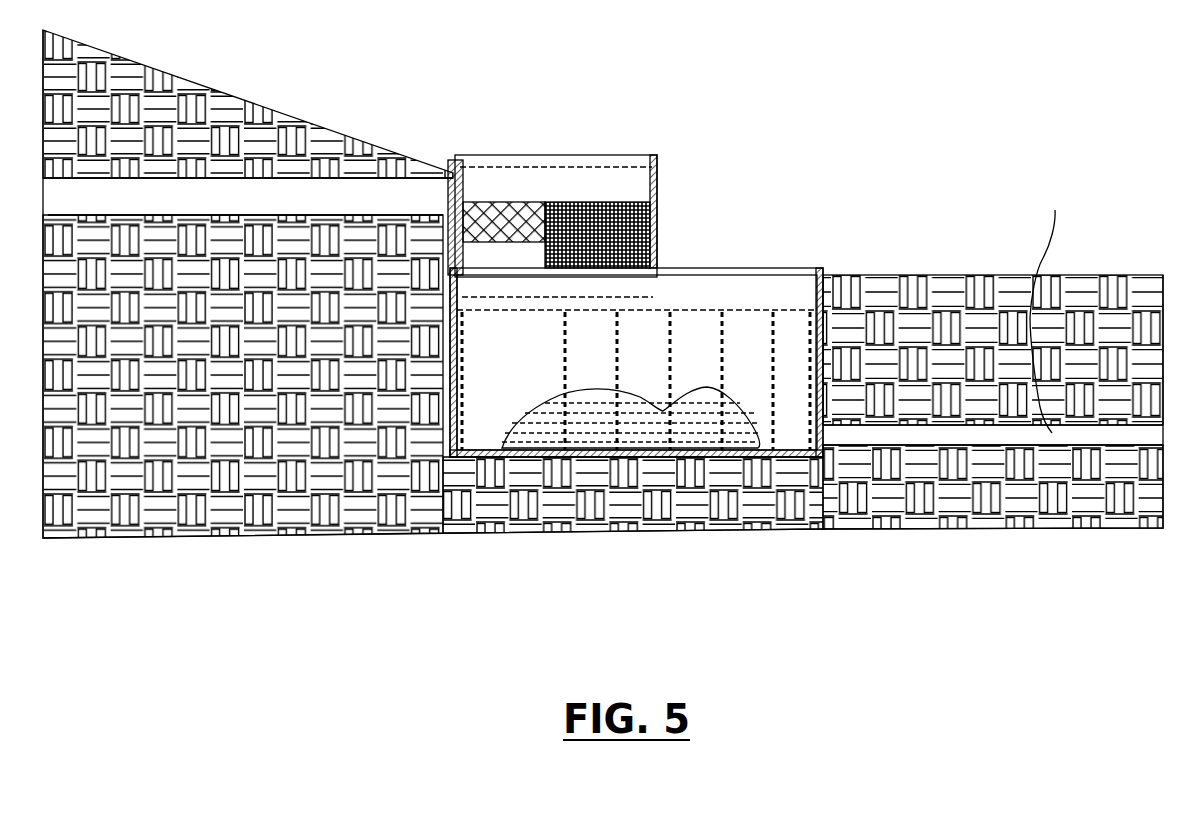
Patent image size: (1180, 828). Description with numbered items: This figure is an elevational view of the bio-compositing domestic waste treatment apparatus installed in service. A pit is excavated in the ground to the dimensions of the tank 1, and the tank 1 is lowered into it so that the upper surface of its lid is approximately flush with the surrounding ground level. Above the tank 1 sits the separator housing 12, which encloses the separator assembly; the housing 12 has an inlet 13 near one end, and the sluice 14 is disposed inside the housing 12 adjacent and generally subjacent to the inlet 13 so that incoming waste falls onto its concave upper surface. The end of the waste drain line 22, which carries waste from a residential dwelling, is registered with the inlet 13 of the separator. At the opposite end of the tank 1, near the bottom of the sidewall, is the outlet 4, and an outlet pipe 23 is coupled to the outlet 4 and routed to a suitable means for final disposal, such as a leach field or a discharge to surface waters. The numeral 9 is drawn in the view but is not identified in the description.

The tank 1 is at (707, 298).
The outlet 4 is at (833, 427).
The filter baffles 9 is at (780, 324).
The separator housing 12 is at (580, 187).
The inlet 13 is at (447, 177).
The sluice 14 is at (517, 200).
The waste drain line 22 is at (323, 193).
The outlet pipe 23 is at (1055, 210).